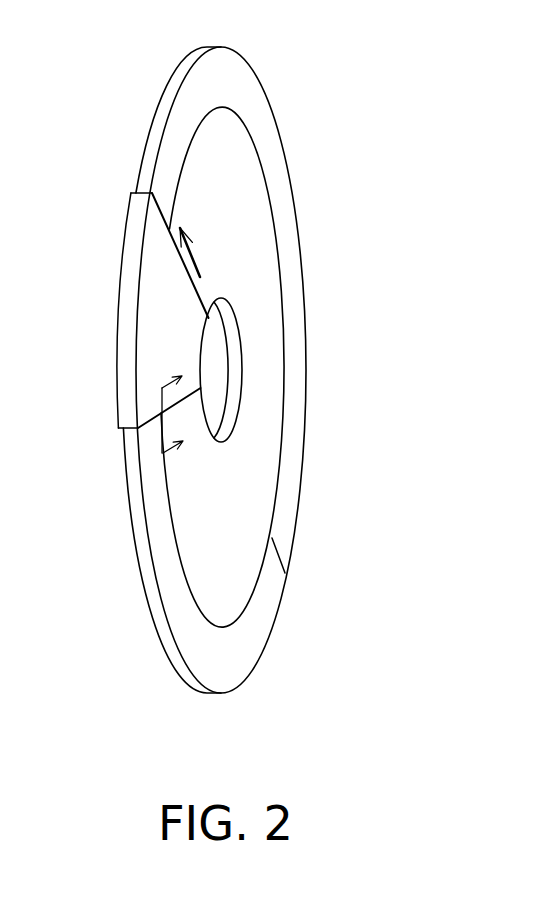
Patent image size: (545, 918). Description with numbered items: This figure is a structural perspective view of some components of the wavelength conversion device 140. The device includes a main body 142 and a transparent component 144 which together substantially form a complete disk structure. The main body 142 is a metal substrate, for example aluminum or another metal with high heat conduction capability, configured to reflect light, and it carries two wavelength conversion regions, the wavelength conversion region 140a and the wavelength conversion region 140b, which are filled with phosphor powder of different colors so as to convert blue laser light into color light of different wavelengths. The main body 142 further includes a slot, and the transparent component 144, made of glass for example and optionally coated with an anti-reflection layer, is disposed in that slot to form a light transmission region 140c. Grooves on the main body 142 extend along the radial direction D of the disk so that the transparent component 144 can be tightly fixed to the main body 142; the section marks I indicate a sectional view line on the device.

The wavelength conversion device 140 is at (330, 515).
The wavelength conversion region 140a is at (244, 93).
The wavelength conversion region 140b is at (240, 653).
The light transmission region 140c is at (175, 334).
The main body 142 is at (243, 213).
The transparent component 144 is at (183, 306).
The radial direction D is at (210, 250).
The section line I is at (198, 455).